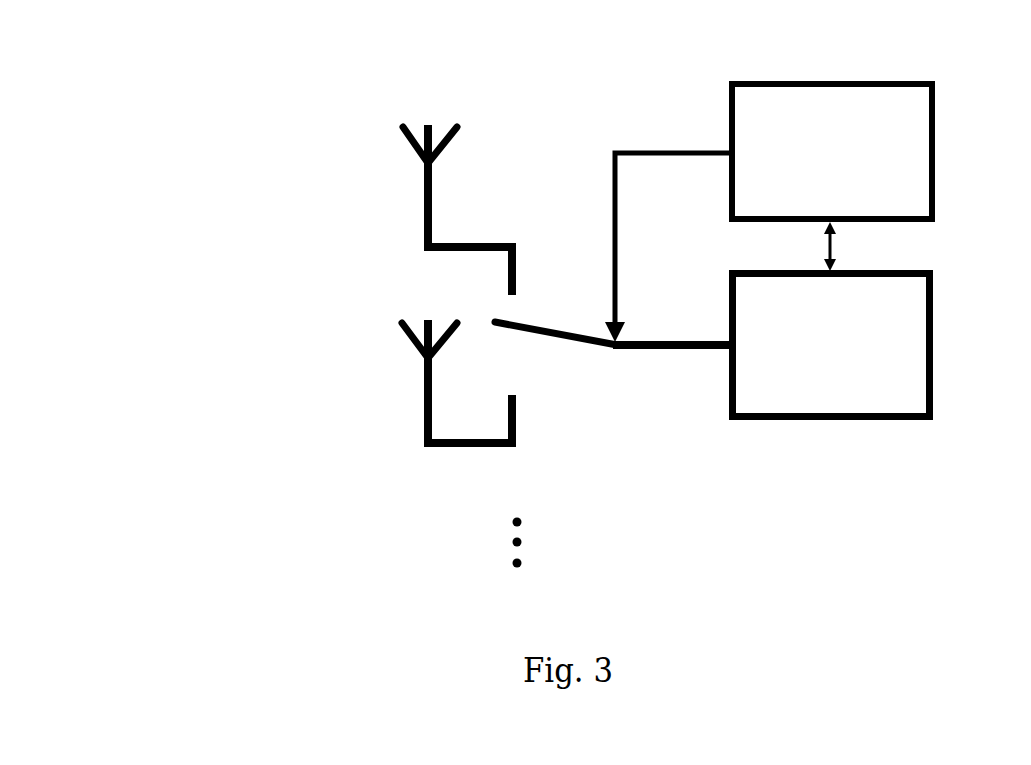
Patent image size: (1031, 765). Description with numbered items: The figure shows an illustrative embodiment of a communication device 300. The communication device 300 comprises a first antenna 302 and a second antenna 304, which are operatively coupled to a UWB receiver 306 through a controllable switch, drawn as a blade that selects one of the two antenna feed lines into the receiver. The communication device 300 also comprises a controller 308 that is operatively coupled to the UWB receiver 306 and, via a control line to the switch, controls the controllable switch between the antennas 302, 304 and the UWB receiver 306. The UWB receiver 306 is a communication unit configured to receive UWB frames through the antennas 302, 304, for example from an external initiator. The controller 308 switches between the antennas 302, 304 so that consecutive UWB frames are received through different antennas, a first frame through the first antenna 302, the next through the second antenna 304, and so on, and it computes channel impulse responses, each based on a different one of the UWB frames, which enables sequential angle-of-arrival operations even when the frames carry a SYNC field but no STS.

The communication device 300 is at (138, 110).
The first antenna 302 is at (428, 187).
The second antenna 304 is at (428, 395).
The UWB receiver 306 is at (935, 385).
The controller 308 is at (936, 168).